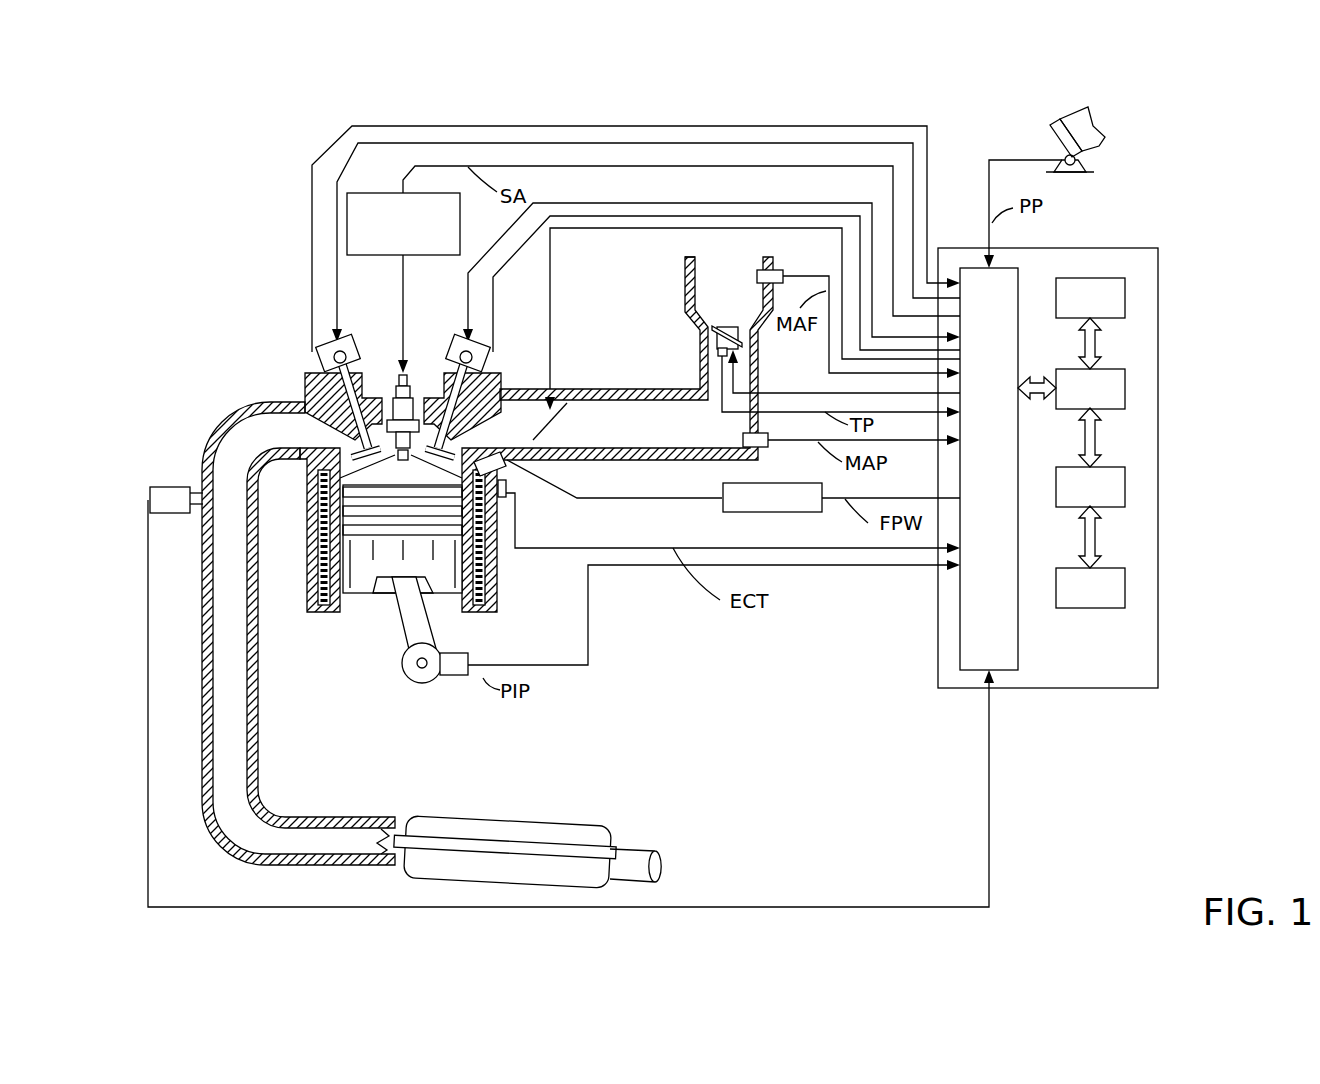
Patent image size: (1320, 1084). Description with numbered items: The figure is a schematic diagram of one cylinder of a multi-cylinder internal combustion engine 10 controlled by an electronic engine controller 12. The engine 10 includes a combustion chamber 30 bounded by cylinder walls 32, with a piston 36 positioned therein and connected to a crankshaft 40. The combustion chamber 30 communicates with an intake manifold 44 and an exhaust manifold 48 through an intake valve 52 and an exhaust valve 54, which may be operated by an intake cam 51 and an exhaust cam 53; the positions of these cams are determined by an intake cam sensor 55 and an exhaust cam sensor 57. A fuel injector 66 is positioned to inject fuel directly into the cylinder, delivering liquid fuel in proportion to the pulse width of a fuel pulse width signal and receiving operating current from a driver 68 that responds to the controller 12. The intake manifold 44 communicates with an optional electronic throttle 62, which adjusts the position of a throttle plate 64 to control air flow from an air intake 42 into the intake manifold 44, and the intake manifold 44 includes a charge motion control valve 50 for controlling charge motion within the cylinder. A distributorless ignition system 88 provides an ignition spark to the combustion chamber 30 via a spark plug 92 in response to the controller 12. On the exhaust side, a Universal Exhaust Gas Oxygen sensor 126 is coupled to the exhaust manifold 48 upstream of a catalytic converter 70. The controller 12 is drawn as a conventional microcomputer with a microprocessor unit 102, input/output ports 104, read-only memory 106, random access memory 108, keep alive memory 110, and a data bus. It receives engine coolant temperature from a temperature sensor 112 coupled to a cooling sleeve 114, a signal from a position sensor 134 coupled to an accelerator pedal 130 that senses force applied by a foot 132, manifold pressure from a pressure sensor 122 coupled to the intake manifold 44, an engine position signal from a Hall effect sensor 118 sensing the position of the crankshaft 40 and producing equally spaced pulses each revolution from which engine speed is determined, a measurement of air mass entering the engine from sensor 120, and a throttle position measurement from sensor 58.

The internal combustion engine 10 is at (240, 320).
The electronic engine controller 12 is at (1152, 252).
The combustion chamber 30 is at (402, 468).
The cylinder walls 32 is at (347, 600).
The piston 36 is at (388, 566).
The crankshaft 40 is at (413, 683).
The air intake 42 is at (738, 302).
The intake manifold 44 is at (678, 438).
The exhaust manifold 48 is at (287, 444).
The charge motion control valve 50 is at (552, 415).
The intake cam 51 is at (466, 344).
The intake valve 52 is at (446, 427).
The exhaust cam 53 is at (340, 340).
The exhaust valve 54 is at (352, 440).
The intake cam sensor 55 is at (484, 362).
The exhaust cam sensor 57 is at (324, 350).
The throttle position sensor 58 is at (712, 356).
The electronic throttle 62 is at (742, 336).
The throttle plate 64 is at (712, 333).
The fuel injector 66 is at (508, 470).
The driver 68 is at (752, 513).
The catalytic converter 70 is at (407, 816).
The distributorless ignition system 88 is at (363, 193).
The spark plug 92 is at (411, 378).
The microprocessor unit 102 is at (1127, 390).
The input/output ports 104 is at (1012, 278).
The read-only memory 106 is at (1127, 295).
The random access memory 108 is at (1127, 494).
The keep alive memory 110 is at (1127, 596).
The temperature sensor 112 is at (507, 494).
The cooling sleeve 114 is at (490, 570).
The Hall effect sensor 118 is at (448, 677).
The air mass sensor 120 is at (783, 272).
The pressure sensor 122 is at (765, 449).
The Universal Exhaust Gas Oxygen sensor 126 is at (150, 492).
The accelerator pedal 130 is at (1052, 128).
The foot 132 is at (1098, 122).
The position sensor 134 is at (1082, 160).